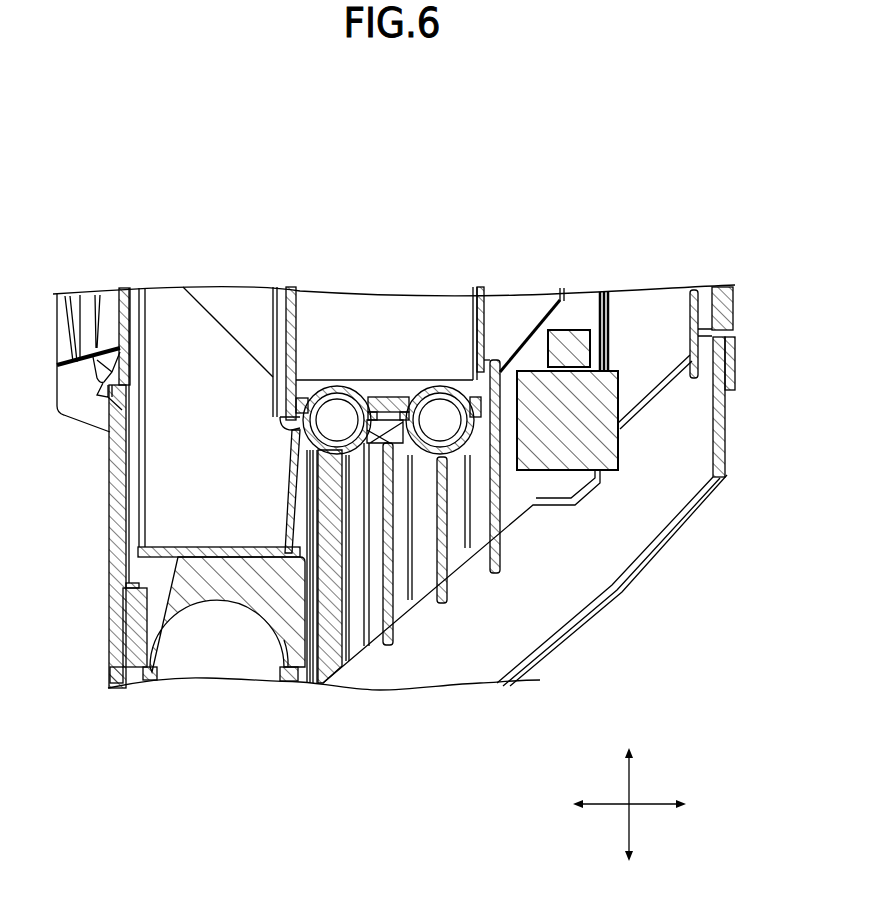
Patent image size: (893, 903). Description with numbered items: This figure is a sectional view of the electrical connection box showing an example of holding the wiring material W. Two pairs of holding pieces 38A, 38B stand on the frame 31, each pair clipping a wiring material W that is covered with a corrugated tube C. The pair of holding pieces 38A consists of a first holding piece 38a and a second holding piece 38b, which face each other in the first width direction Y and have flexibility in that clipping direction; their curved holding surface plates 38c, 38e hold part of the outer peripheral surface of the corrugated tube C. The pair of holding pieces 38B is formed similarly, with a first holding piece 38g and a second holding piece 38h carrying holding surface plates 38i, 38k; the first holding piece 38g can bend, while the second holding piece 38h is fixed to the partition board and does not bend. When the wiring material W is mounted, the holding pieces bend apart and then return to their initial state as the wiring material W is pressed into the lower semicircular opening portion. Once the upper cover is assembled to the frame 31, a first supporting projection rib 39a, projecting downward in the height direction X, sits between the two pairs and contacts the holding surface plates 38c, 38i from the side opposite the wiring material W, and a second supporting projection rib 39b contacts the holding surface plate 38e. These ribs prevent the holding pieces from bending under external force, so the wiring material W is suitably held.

The frame 31 is at (387, 437).
The pair of holding pieces 38A is at (334, 292).
The pair of holding pieces 38B is at (439, 263).
The first holding piece 38a is at (369, 378).
The second holding piece 38b is at (317, 418).
The holding surface plate 38c is at (344, 319).
The holding surface plate 38e is at (307, 301).
The first holding piece 38g is at (407, 380).
The second holding piece 38h is at (473, 367).
The holding surface plate 38i is at (433, 290).
The holding surface plate 38k is at (470, 272).
The first supporting projection rib 39a is at (387, 413).
The second supporting projection rib 39b is at (300, 440).
The wiring material W is at (347, 462).
The corrugated tube C is at (347, 462).
The height direction X is at (629, 815).
The first width direction Y is at (622, 806).